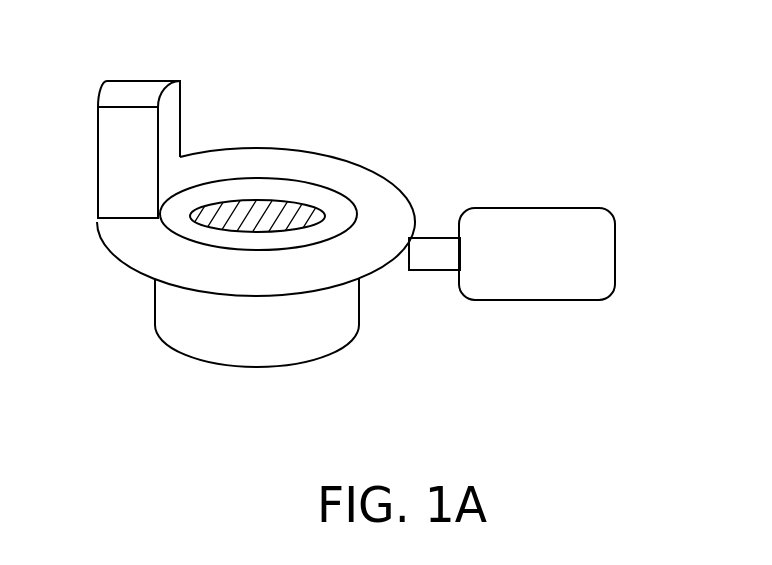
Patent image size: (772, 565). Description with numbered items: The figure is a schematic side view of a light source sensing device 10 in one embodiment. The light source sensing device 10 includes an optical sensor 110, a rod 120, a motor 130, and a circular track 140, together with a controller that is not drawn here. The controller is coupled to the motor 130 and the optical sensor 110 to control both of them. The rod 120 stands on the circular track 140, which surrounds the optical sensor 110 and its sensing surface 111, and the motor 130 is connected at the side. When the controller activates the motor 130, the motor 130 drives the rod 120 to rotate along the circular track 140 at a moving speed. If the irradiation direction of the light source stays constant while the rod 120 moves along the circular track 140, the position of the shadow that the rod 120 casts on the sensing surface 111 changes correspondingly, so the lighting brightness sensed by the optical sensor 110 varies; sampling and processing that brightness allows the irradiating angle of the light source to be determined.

The light source sensing device 10 is at (673, 432).
The optical sensor 110 is at (330, 330).
The sensing surface 111 is at (260, 208).
The rod 120 is at (120, 97).
The motor 130 is at (597, 258).
The circular track 140 is at (325, 160).